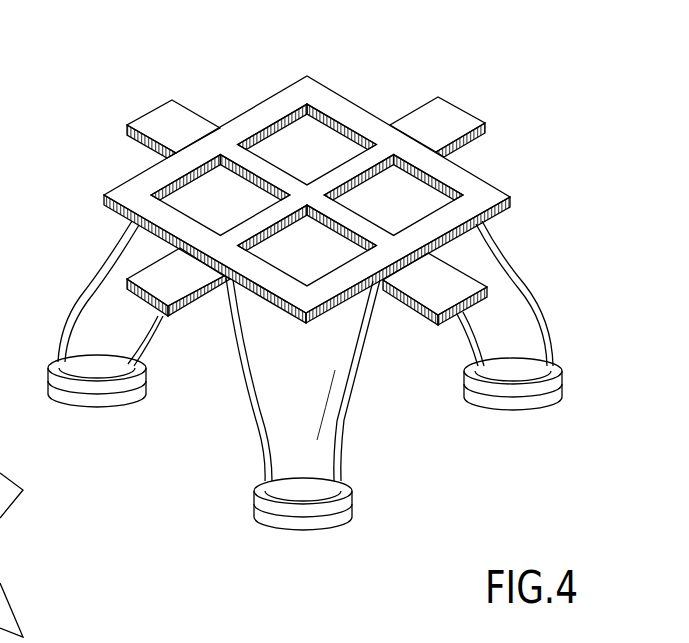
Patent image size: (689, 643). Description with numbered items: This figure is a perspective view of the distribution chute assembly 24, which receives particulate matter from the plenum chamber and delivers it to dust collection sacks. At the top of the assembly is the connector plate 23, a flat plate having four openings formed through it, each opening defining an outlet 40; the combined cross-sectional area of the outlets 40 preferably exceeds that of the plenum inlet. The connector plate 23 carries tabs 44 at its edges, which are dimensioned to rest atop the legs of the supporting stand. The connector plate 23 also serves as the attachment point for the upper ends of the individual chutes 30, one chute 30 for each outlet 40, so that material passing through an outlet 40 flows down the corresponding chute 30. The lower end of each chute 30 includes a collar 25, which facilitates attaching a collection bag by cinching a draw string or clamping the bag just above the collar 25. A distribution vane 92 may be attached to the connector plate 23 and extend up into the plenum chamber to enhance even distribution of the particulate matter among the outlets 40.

The distribution chute assembly 24 is at (496, 51).
The connector plate 23 is at (488, 183).
The outlet 40 is at (340, 97).
The tab 44 is at (180, 112).
The chute 30 is at (80, 287).
The collar 25 is at (127, 399).
The distribution vane 92 is at (0, 562).